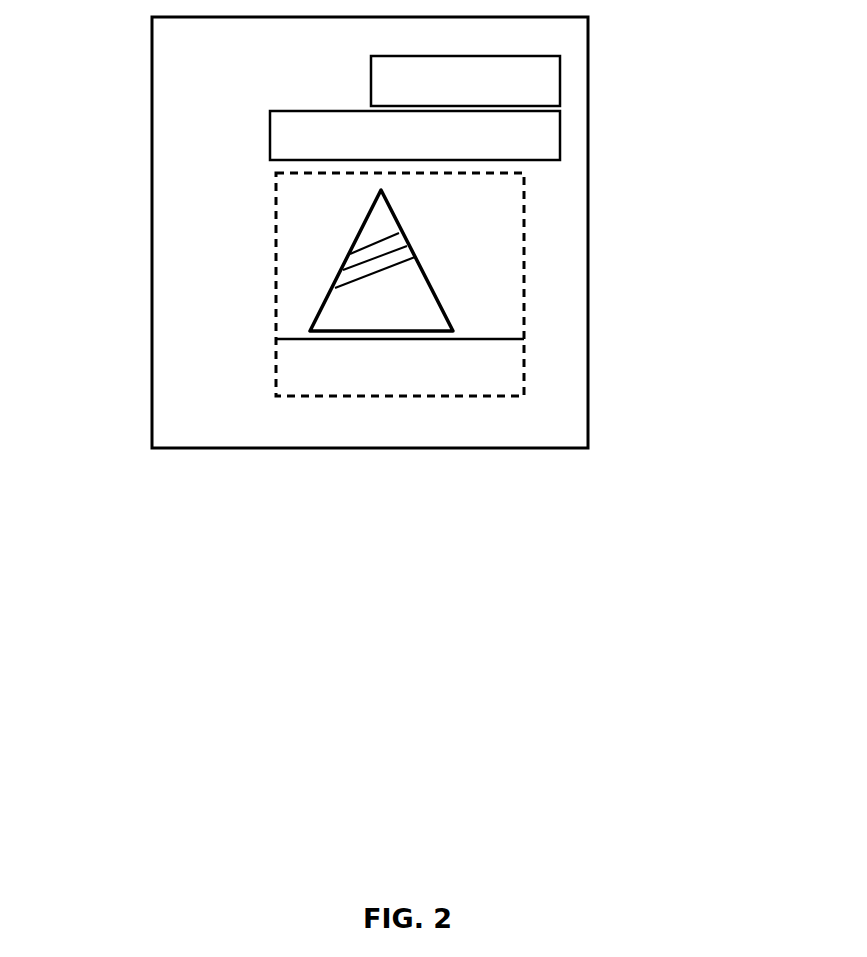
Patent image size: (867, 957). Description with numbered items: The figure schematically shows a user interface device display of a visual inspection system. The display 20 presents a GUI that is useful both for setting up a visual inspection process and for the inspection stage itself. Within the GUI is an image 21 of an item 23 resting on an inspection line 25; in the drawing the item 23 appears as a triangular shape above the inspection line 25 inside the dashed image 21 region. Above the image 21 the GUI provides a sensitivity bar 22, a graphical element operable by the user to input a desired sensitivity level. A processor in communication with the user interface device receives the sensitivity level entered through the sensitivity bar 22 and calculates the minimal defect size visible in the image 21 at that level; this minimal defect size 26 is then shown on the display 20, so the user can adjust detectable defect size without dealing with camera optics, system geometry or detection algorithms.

The display 20 is at (130, 147).
The image 21 is at (283, 240).
The sensitivity bar 22 is at (538, 76).
The item 23 is at (374, 308).
The inspection line 25 is at (342, 348).
The minimal defect size 26 is at (542, 127).